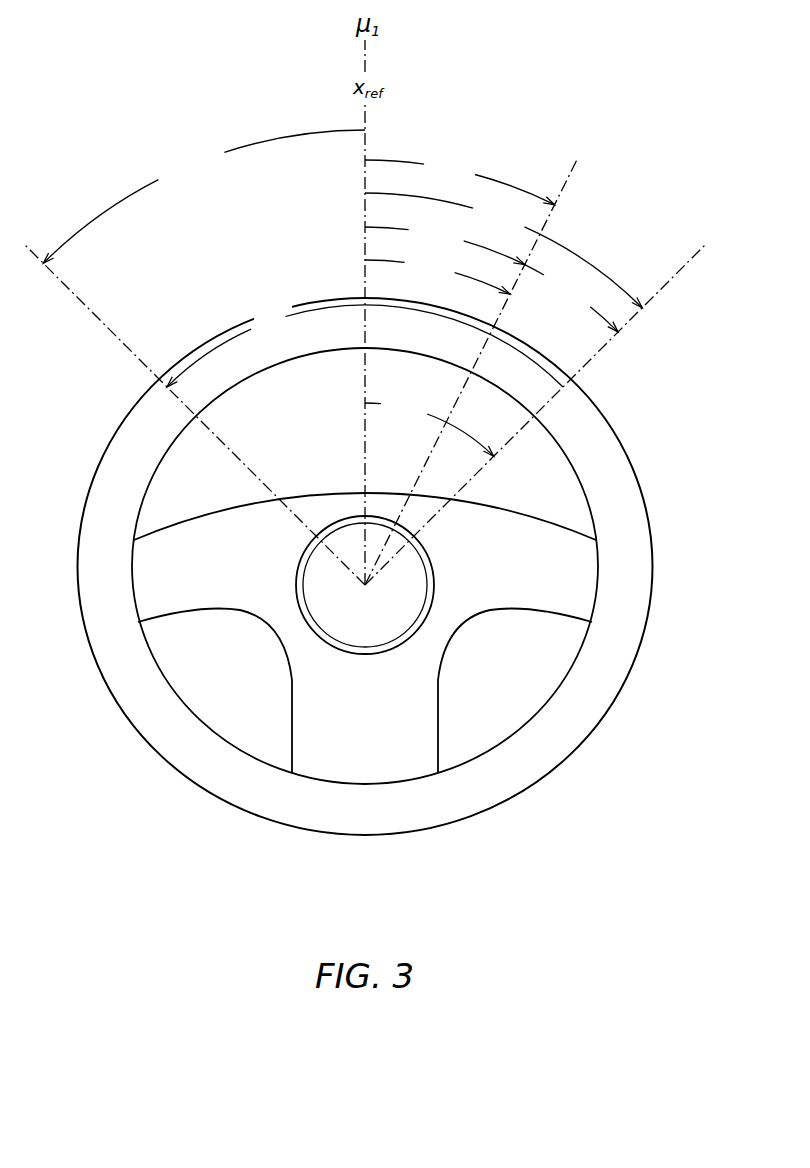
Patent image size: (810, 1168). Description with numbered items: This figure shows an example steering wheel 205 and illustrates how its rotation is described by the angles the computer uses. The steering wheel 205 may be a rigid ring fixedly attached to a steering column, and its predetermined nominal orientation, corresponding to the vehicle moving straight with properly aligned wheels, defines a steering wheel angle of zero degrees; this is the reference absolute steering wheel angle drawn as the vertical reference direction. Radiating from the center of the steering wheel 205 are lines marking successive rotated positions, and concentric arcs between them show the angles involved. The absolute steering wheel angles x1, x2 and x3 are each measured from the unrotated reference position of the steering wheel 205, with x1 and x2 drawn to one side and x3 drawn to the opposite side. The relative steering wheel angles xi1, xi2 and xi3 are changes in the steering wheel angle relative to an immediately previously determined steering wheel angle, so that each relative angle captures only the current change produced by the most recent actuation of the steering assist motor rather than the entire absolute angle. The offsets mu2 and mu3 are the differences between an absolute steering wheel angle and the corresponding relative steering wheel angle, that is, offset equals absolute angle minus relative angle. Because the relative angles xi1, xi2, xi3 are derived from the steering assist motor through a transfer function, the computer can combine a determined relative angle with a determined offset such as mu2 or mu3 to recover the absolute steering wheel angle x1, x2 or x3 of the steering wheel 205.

The steering wheel 205 is at (104, 90).
The absolute steering wheel angle x1 is at (460, 182).
The absolute steering wheel angle x2 is at (503, 250).
The absolute steering wheel angle x3 is at (204, 196).
The relative steering wheel angle xi1 is at (445, 246).
The relative steering wheel angle xi2 is at (571, 298).
The relative steering wheel angle xi3 is at (365, 346).
The offset mu2 is at (437, 277).
The offset mu3 is at (429, 426).